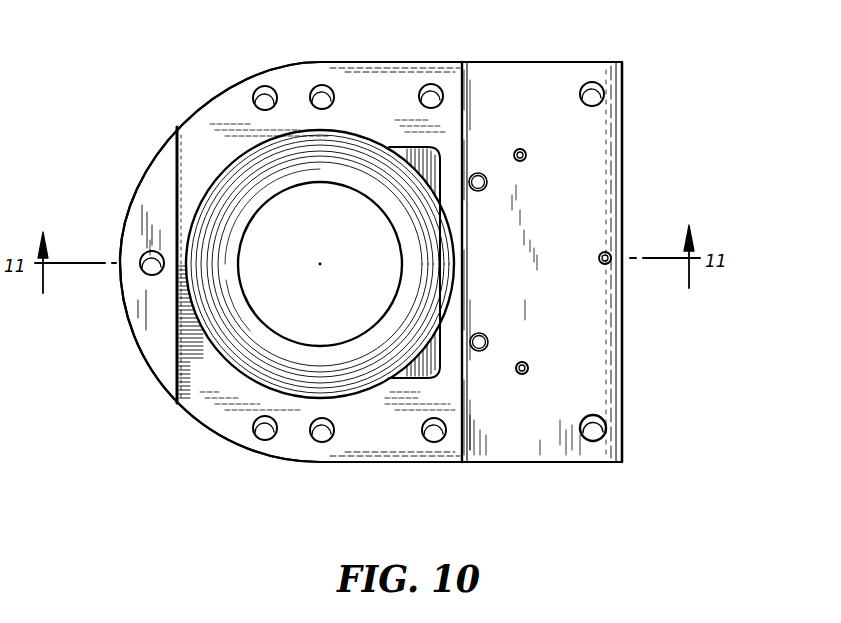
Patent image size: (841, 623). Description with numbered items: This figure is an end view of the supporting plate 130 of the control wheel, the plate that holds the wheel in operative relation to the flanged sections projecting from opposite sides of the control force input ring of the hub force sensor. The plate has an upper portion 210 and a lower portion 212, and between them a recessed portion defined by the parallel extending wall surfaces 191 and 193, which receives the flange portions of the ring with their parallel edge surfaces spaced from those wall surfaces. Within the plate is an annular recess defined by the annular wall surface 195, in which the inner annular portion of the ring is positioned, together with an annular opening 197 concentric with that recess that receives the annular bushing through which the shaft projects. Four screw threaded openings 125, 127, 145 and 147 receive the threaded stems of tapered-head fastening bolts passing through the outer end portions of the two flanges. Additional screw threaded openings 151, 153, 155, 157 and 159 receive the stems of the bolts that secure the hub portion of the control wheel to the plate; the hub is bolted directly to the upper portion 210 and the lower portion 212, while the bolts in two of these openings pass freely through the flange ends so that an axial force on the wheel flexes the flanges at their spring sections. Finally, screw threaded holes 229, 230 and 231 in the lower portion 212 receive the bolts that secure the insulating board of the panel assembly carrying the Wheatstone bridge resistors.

The supporting plate 130 is at (470, 62).
The upper portion of the supporting plate 210 is at (157, 177).
The parallel wall surface 191 is at (175, 138).
The parallel wall surface 193 is at (460, 141).
The lower portion of the supporting plate 212 is at (612, 224).
The annular wall surface 195 is at (318, 130).
The annular opening 197 is at (268, 192).
The screw threaded opening 147 is at (262, 101).
The screw threaded opening 153 is at (331, 99).
The screw threaded opening 145 is at (422, 92).
The screw threaded opening 155 is at (587, 86).
The screw threaded opening 151 is at (152, 277).
The screw threaded opening 127 is at (260, 423).
The screw threaded opening 159 is at (322, 426).
The screw threaded opening 125 is at (435, 435).
The screw threaded opening 157 is at (593, 420).
The screw threaded hole 231 is at (527, 155).
The screw threaded hole 229 is at (529, 367).
The screw threaded hole 230 is at (605, 252).